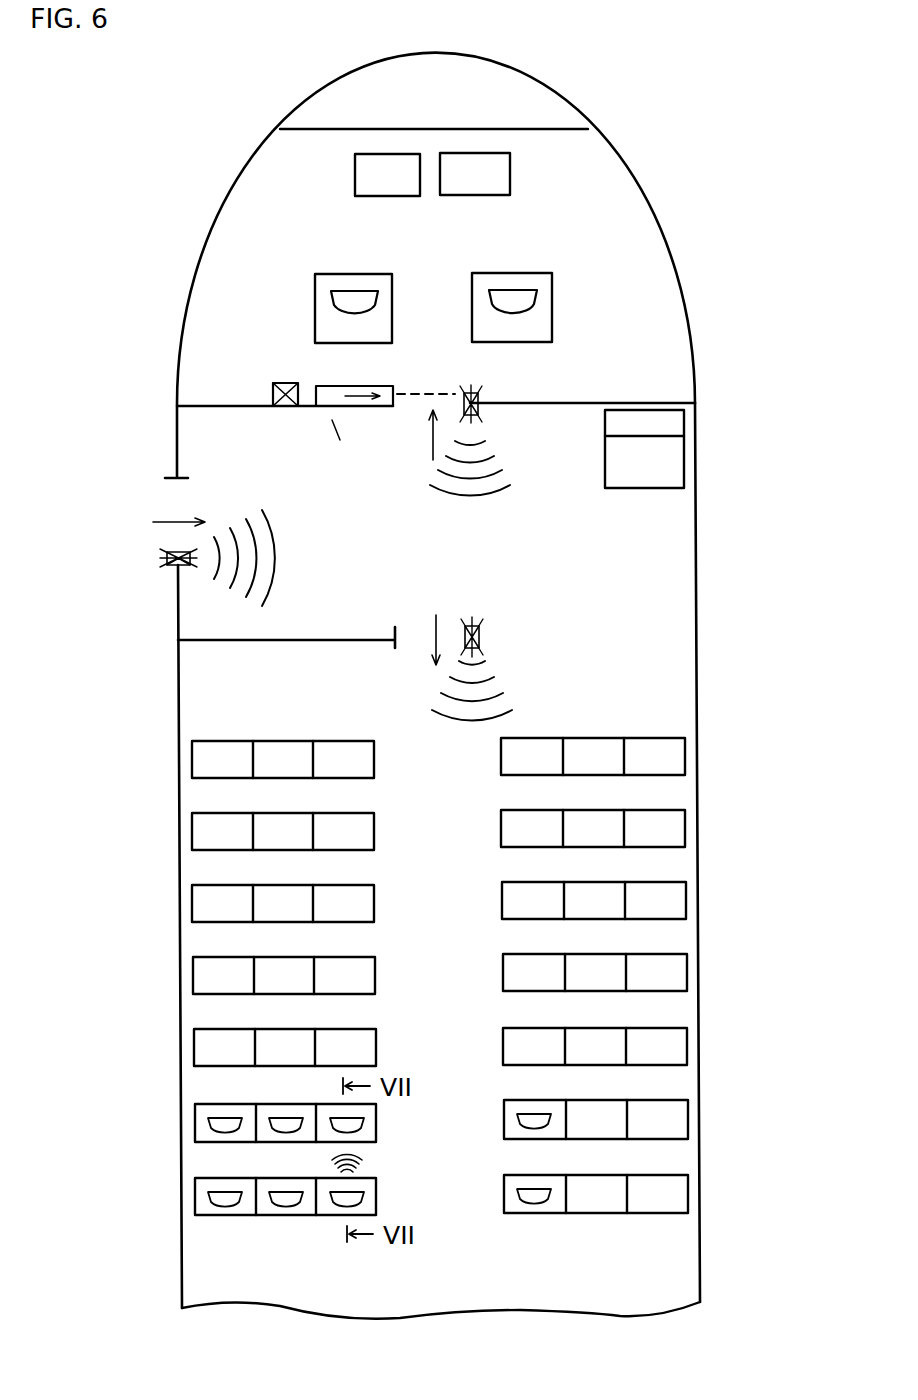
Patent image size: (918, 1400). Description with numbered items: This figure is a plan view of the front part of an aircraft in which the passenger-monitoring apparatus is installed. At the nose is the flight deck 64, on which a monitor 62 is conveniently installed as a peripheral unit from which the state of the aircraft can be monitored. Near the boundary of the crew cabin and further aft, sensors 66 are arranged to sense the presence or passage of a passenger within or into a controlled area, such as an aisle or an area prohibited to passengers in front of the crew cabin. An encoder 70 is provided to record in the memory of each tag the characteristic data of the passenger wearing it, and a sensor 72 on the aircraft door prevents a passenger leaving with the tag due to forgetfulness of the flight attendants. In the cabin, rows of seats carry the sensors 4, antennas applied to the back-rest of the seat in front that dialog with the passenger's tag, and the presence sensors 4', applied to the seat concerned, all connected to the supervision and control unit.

The sensor 4 is at (312, 1123).
The presence sensor 4' is at (317, 1196).
The monitor 62 is at (353, 174).
The flight deck 64 is at (605, 252).
The sensor 66 is at (480, 393).
The encoder 70 is at (647, 460).
The sensor 72 is at (170, 553).